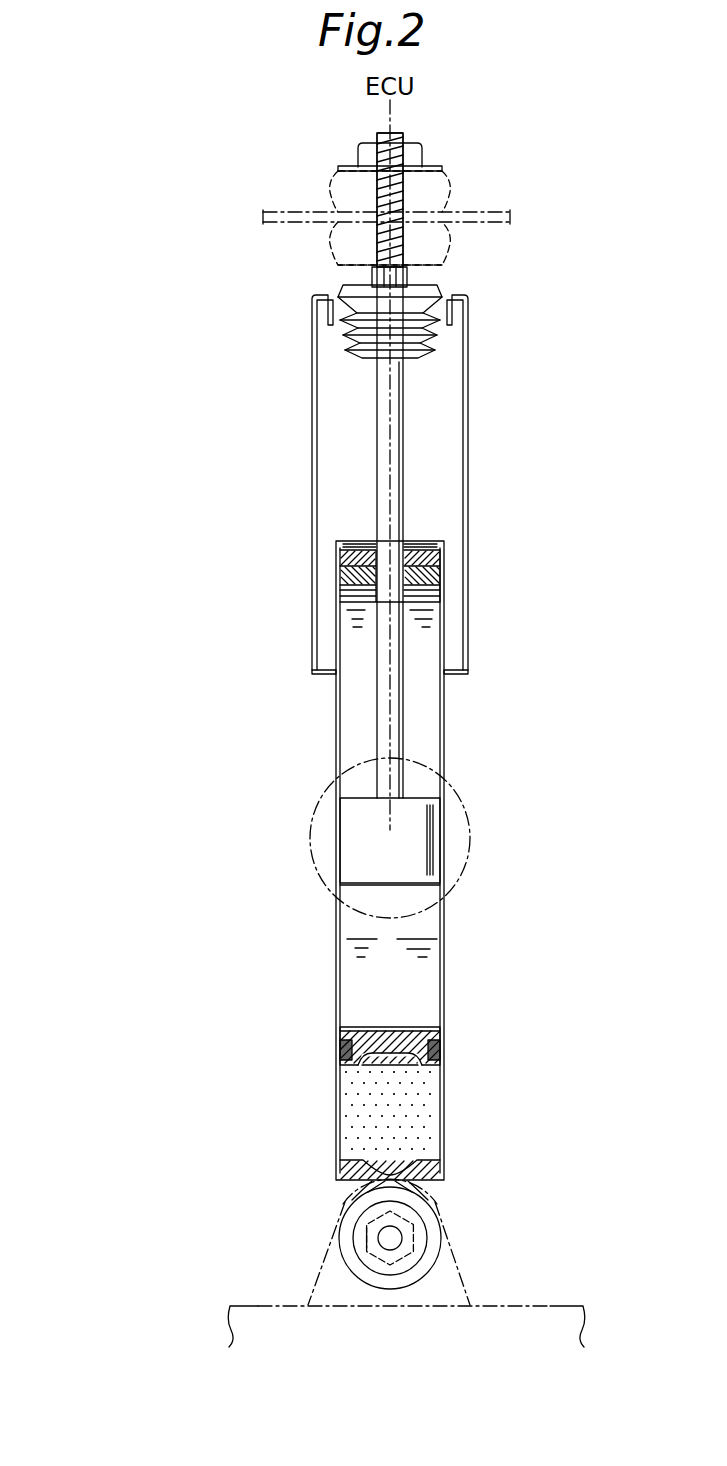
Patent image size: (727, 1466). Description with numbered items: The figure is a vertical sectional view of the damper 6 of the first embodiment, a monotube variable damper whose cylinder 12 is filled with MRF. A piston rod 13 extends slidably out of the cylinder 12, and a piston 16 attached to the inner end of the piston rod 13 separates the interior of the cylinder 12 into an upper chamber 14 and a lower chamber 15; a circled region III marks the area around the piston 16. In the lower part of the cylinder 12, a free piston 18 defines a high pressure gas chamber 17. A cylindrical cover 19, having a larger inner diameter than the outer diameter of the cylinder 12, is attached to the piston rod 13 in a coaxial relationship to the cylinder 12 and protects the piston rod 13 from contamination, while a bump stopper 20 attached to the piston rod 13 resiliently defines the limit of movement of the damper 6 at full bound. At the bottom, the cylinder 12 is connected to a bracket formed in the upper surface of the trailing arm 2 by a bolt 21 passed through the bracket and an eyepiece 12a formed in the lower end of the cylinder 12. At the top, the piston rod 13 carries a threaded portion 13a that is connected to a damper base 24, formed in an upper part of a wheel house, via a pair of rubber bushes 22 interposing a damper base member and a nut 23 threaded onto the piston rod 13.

The trailing arm 2 is at (517, 1306).
The damper 6 is at (130, 402).
The cylinder 12 is at (337, 922).
The eyepiece 12a is at (345, 1223).
The piston rod 13 is at (375, 720).
The threaded portion 13a is at (377, 137).
The upper chamber 14 is at (425, 712).
The lower chamber 15 is at (423, 932).
The piston 16 is at (357, 798).
The high pressure gas chamber 17 is at (420, 1110).
The free piston 18 is at (350, 1037).
The cylindrical cover 19 is at (312, 483).
The bump stopper 20 is at (355, 345).
The bolt 21 is at (414, 1237).
The rubber bushes 22 is at (443, 187).
The nut 23 is at (420, 152).
The damper base 24 is at (290, 212).
The detail circle III is at (467, 817).